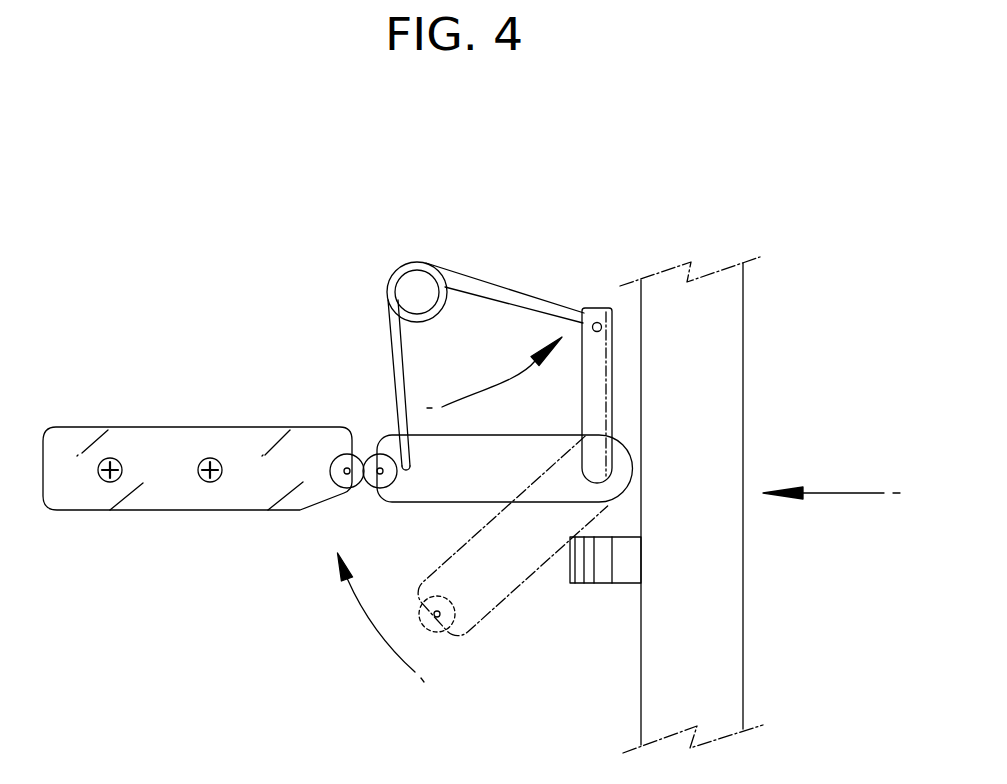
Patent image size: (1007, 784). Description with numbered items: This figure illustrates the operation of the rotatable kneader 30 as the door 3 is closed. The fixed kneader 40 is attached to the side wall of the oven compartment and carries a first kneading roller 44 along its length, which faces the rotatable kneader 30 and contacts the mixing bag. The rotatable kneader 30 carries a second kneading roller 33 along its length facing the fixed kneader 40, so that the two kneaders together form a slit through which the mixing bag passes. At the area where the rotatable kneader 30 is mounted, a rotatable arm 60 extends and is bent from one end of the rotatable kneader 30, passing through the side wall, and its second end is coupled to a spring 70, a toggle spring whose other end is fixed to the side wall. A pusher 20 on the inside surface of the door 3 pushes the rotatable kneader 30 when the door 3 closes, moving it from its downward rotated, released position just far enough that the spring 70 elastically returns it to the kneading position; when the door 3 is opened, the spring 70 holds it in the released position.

The door 3 is at (733, 597).
The pusher 20 is at (607, 583).
The rotatable kneader 30 is at (488, 612).
The second kneading roller 33 is at (430, 625).
The fixed kneader 40 is at (193, 513).
The first kneading roller 44 is at (352, 492).
The rotatable arm 60 is at (612, 397).
The spring 70 is at (488, 280).